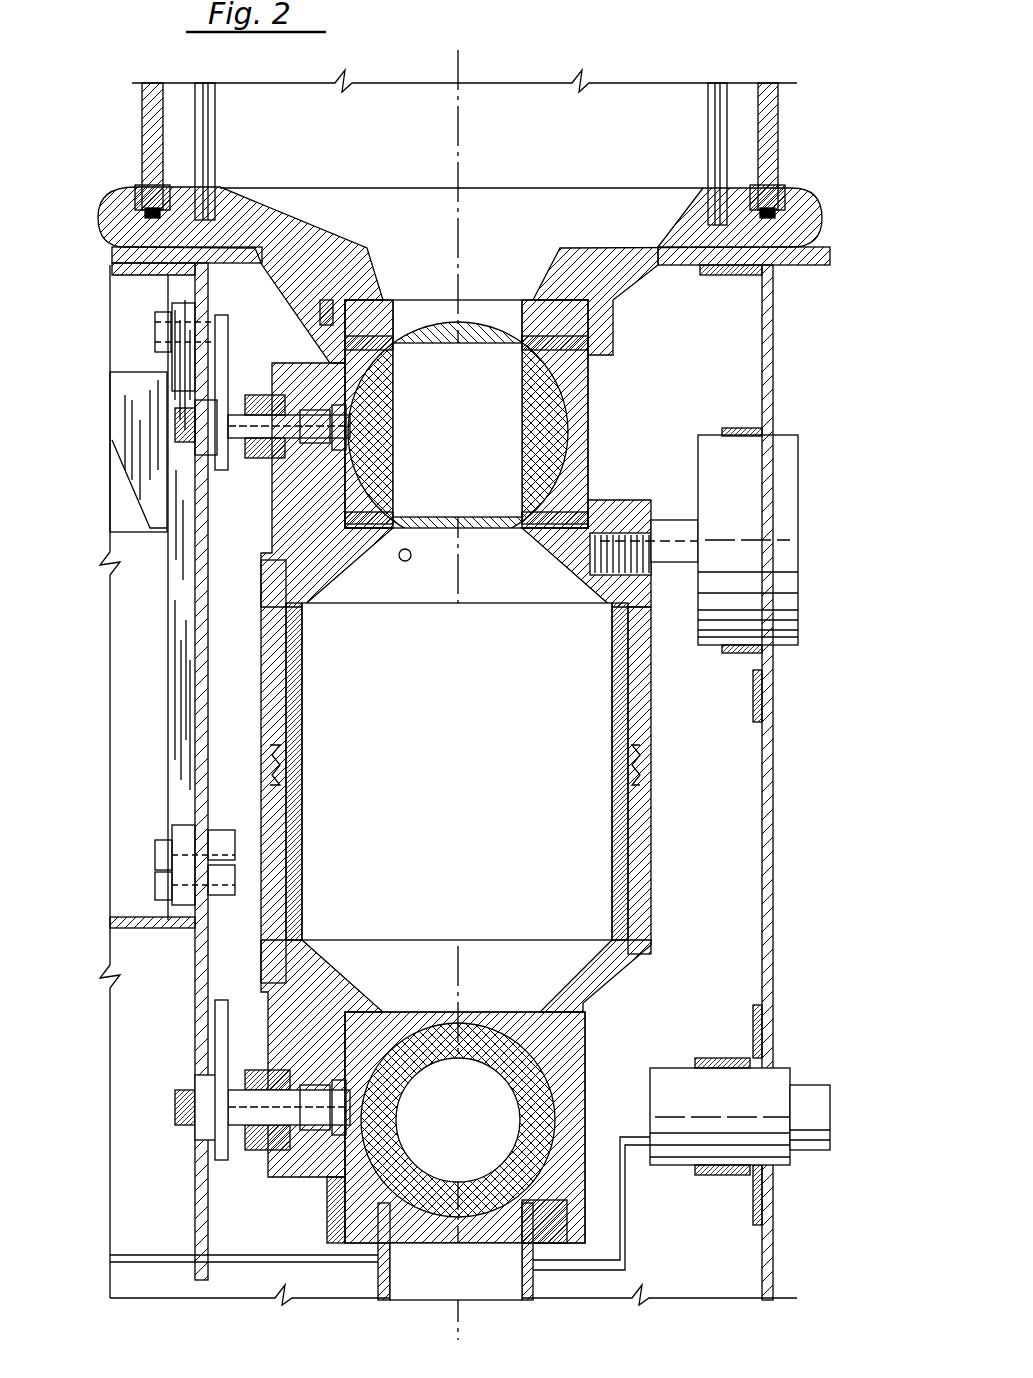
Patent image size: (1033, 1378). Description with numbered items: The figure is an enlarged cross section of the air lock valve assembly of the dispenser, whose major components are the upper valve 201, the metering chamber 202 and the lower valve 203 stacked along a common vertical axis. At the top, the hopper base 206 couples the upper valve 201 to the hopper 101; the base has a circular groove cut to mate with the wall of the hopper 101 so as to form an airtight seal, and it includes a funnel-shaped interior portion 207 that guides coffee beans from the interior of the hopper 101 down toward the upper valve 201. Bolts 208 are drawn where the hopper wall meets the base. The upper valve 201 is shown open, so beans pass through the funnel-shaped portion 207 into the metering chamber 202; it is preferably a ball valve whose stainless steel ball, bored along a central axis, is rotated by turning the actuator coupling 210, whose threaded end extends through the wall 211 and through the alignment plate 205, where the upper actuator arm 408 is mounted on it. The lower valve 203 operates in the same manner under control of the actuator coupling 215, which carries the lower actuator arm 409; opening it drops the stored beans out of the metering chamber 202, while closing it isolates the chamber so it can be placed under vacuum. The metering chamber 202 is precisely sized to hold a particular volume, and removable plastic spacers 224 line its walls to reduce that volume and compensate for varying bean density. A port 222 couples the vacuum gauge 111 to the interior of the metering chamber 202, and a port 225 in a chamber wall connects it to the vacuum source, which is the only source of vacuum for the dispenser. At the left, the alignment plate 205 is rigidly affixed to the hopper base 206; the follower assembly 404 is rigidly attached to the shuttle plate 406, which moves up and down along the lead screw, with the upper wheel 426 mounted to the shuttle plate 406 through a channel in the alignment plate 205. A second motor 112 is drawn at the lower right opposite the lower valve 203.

The hopper 101 is at (778, 146).
The bolt 208 is at (778, 212).
The hopper base 206 is at (822, 218).
The funnel-shaped interior portion 207 is at (548, 227).
The upper wheel 426 is at (223, 300).
The actuator coupling 210 is at (232, 390).
The follower assembly 404 is at (125, 412).
The upper valve 201 is at (605, 412).
The port 222 is at (655, 545).
The vacuum gauge 111 is at (780, 520).
The upper actuator arm 408 is at (232, 470).
The wall 211 is at (335, 550).
The port 225 is at (410, 560).
The shuttle plate 406 is at (175, 660).
The metering chamber 202 is at (540, 753).
The spacers 224 is at (302, 825).
The alignment plate 205 is at (196, 950).
The lower actuator arm 409 is at (220, 1015).
The lower valve 203 is at (600, 1080).
The motor 112 is at (770, 1088).
The actuator coupling 215 is at (240, 1125).